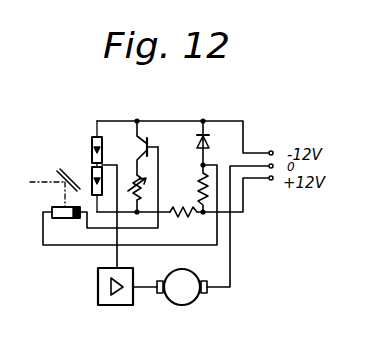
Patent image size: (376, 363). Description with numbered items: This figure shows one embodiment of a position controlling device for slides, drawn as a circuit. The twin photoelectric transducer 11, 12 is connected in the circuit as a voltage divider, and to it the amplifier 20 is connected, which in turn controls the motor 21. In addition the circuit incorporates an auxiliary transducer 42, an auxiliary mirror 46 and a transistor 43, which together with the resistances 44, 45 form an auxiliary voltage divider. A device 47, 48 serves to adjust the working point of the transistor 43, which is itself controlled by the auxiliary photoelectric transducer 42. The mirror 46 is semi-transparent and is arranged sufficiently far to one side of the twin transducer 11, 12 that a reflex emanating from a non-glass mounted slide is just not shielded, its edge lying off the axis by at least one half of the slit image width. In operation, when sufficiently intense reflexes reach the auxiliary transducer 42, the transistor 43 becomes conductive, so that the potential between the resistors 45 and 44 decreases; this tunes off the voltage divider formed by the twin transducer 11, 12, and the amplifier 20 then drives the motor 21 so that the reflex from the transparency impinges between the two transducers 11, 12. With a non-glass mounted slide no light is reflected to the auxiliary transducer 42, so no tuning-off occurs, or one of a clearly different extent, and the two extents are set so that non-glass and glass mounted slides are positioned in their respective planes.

The twin photoelectric transducer (first half) 11 is at (93, 187).
The twin photoelectric transducer (second half) 12 is at (92, 149).
The amplifier 20 is at (117, 305).
The motor 21 is at (182, 305).
The auxiliary transducer 42 is at (65, 218).
The transistor 43 is at (148, 139).
The resistance 44 is at (133, 176).
The resistance 45 is at (185, 227).
The auxiliary mirror 46 is at (60, 168).
The working point adjusting device (part) 47 is at (209, 141).
The working point adjusting device (part) 48 is at (193, 188).